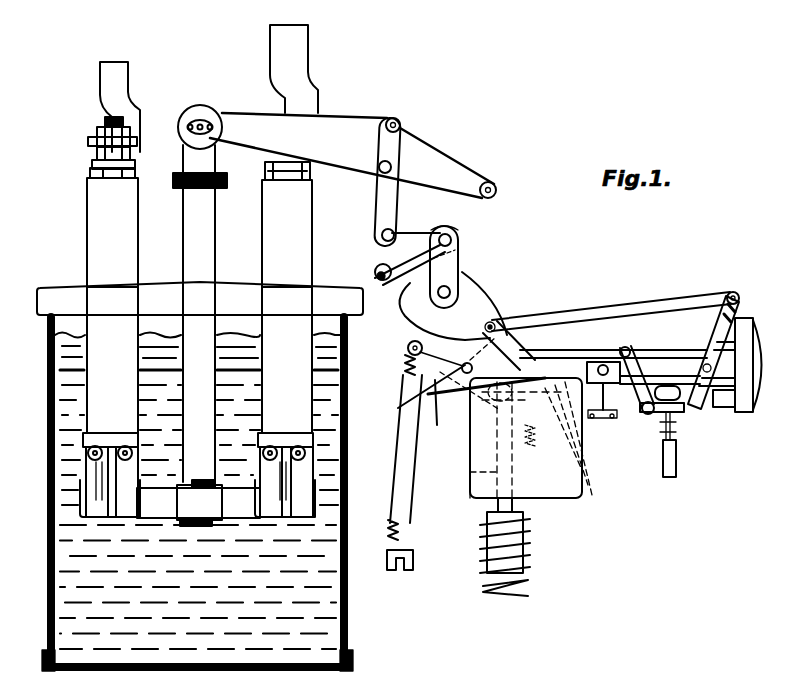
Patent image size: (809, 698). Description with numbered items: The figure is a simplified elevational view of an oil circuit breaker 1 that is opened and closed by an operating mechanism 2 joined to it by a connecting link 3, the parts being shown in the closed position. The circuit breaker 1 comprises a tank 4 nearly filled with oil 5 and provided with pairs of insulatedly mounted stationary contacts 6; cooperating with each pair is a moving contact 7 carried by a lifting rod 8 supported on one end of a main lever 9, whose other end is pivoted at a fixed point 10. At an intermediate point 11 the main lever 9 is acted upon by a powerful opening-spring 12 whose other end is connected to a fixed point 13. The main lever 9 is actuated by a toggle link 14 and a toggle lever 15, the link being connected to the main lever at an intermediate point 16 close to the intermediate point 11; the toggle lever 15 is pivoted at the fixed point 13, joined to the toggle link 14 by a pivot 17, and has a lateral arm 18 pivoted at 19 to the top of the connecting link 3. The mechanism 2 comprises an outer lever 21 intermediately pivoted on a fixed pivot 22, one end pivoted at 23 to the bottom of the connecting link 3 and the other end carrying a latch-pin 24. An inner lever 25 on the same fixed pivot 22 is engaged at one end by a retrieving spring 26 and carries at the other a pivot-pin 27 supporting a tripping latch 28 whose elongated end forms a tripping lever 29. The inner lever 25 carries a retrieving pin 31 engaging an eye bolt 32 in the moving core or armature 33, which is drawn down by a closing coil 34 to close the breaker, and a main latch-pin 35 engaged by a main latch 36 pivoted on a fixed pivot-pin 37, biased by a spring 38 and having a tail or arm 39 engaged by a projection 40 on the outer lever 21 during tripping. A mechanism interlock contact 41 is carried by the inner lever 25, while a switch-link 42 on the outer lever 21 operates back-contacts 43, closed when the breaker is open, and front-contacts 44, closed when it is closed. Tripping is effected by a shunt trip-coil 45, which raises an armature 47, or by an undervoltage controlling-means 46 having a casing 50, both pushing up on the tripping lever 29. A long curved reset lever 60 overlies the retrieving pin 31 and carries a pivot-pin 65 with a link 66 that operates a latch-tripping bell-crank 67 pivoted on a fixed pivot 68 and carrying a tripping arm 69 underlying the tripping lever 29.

The oil circuit breaker 1 is at (45, 267).
The operating mechanism 2 is at (555, 302).
The connecting link 3 is at (458, 273).
The tank 4 is at (345, 406).
The oil 5 is at (167, 340).
The stationary contacts 6 is at (88, 200).
The moving contact 7 is at (158, 490).
The lifting rod 8 is at (183, 222).
The main lever 9 is at (264, 118).
The fixed point 10 is at (490, 182).
The intermediate point 11 is at (386, 120).
The opening-spring 12 is at (378, 262).
The fixed point 13 is at (392, 272).
The toggle link 14 is at (374, 192).
The toggle lever 15 is at (445, 228).
The intermediate point 16 is at (378, 163).
The pivot 17 is at (398, 233).
The lateral arm 18 is at (460, 255).
The pivot 19 is at (452, 242).
The outer lever 21 is at (480, 303).
The fixed pivot 22 is at (464, 363).
The pivot 23 is at (440, 293).
The latch-pin 24 is at (636, 368).
The inner lever 25 is at (416, 341).
The retrieving spring 26 is at (405, 365).
The pivot-pin 27 is at (642, 408).
The tripping latch 28 is at (603, 363).
The tripping lever 29 is at (670, 387).
The retrieving pin 31 is at (466, 400).
The eye bolt 32 is at (468, 473).
The moving core or armature 33 is at (482, 553).
The closing coil 34 is at (524, 540).
The main latch-pin 35 is at (583, 445).
The main latch 36 is at (586, 462).
The fixed pivot-pin 37 is at (588, 480).
The spring 38 is at (570, 502).
The tail or arm 39 is at (436, 426).
The projection 40 is at (400, 406).
The mechanism interlock contact 41 is at (604, 419).
The switch-link 42 is at (686, 303).
The back-contacts 43 is at (728, 410).
The front-contacts 44 is at (712, 340).
The shunt trip-coil 45 is at (672, 447).
The undervoltage controlling-means 46 is at (520, 494).
The armature 47 is at (677, 472).
The casing 50 is at (468, 492).
The reset lever 60 is at (538, 352).
The pivot-pin 65 is at (489, 333).
The link 66 is at (628, 347).
The latch-tripping bell-crank 67 is at (640, 388).
The fixed pivot 68 is at (660, 432).
The tripping arm 69 is at (686, 412).